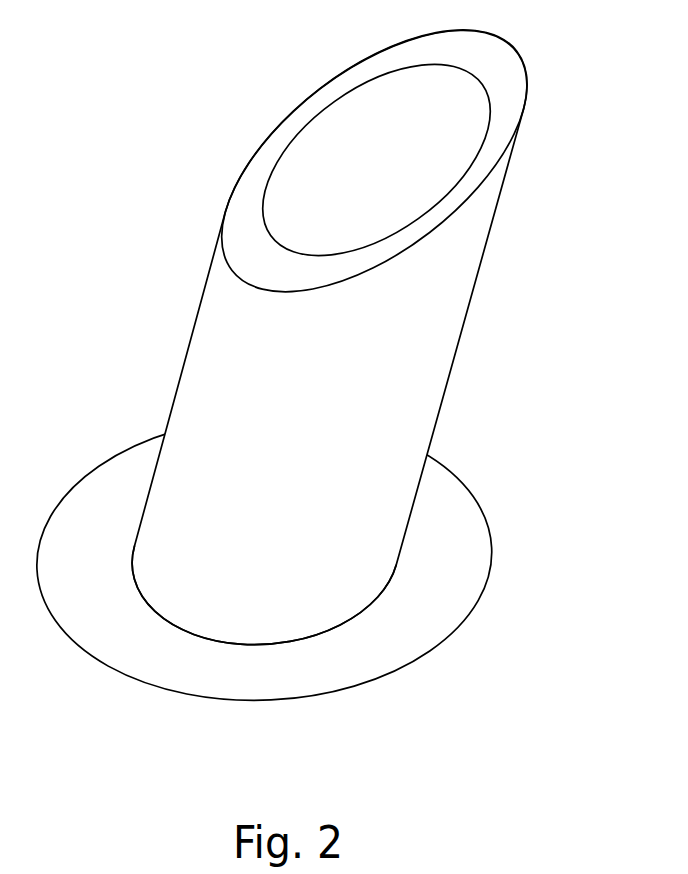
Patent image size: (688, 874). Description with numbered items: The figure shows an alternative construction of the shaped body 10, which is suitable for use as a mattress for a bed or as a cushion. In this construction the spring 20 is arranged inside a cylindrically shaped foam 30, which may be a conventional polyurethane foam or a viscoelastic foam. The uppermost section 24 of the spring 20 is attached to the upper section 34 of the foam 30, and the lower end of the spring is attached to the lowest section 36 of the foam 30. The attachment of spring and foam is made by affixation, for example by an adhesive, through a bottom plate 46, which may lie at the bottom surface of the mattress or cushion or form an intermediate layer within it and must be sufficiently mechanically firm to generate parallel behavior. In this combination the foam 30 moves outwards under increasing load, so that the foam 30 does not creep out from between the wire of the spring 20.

The shaped body 10 is at (316, 382).
The spring 20 is at (390, 171).
The uppermost section of the spring 24 is at (388, 232).
The foam 30 is at (447, 330).
The upper section of the foam 34 is at (510, 162).
The lowest section of the foam 36 is at (338, 595).
The bottom plate 46 is at (470, 610).